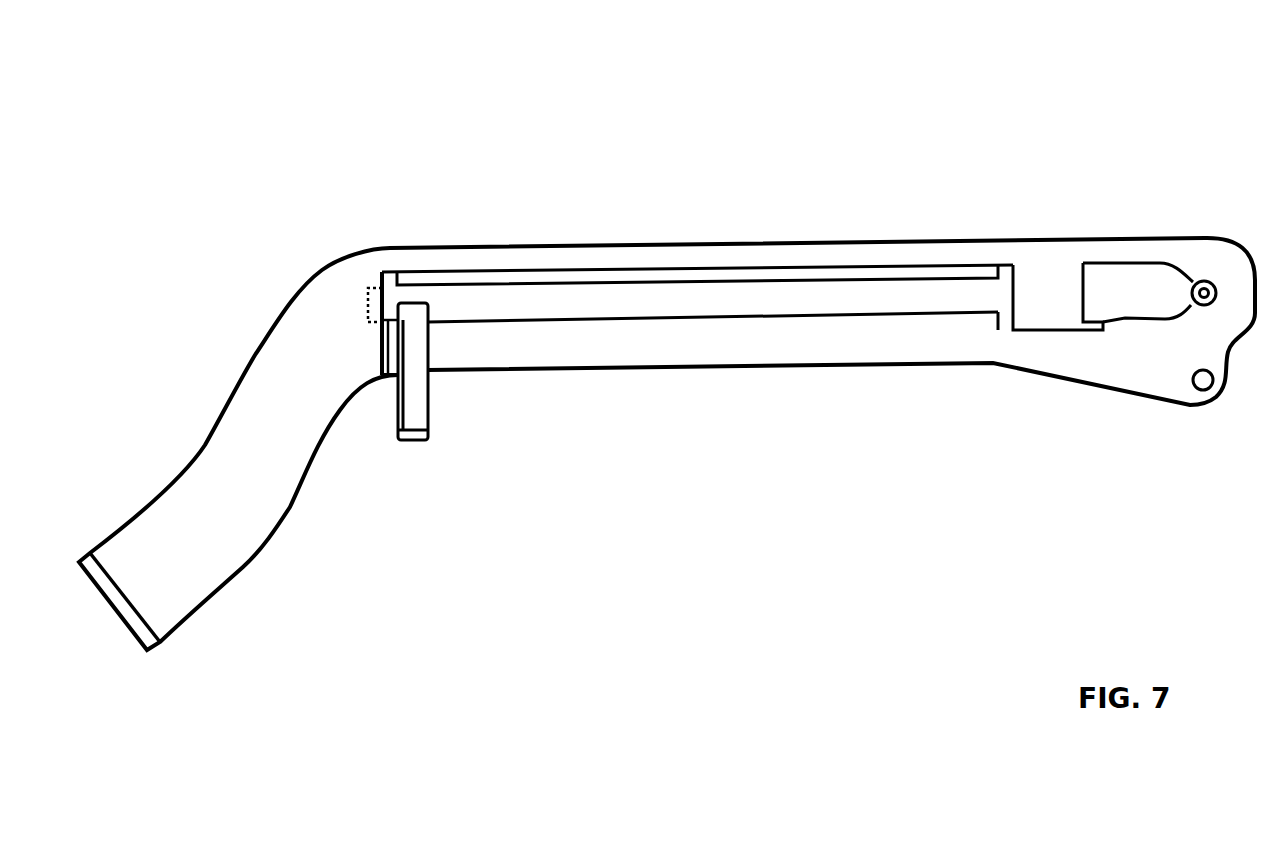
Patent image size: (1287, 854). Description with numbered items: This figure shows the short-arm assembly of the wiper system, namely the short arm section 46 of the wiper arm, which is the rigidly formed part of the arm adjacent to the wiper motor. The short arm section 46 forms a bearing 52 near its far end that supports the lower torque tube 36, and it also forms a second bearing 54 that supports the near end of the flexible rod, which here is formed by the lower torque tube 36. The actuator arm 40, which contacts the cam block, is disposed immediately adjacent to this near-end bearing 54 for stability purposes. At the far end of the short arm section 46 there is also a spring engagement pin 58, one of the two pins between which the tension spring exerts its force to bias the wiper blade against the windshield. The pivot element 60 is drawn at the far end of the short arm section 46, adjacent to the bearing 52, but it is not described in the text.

The lower torque tube 36 is at (690, 290).
The actuator arm 40 is at (413, 390).
The short arm section 46 is at (297, 360).
The bearing 52 is at (1043, 285).
The second bearing 54 is at (375, 305).
The spring engagement pin 58 is at (1193, 385).
The pin 60 is at (1210, 282).